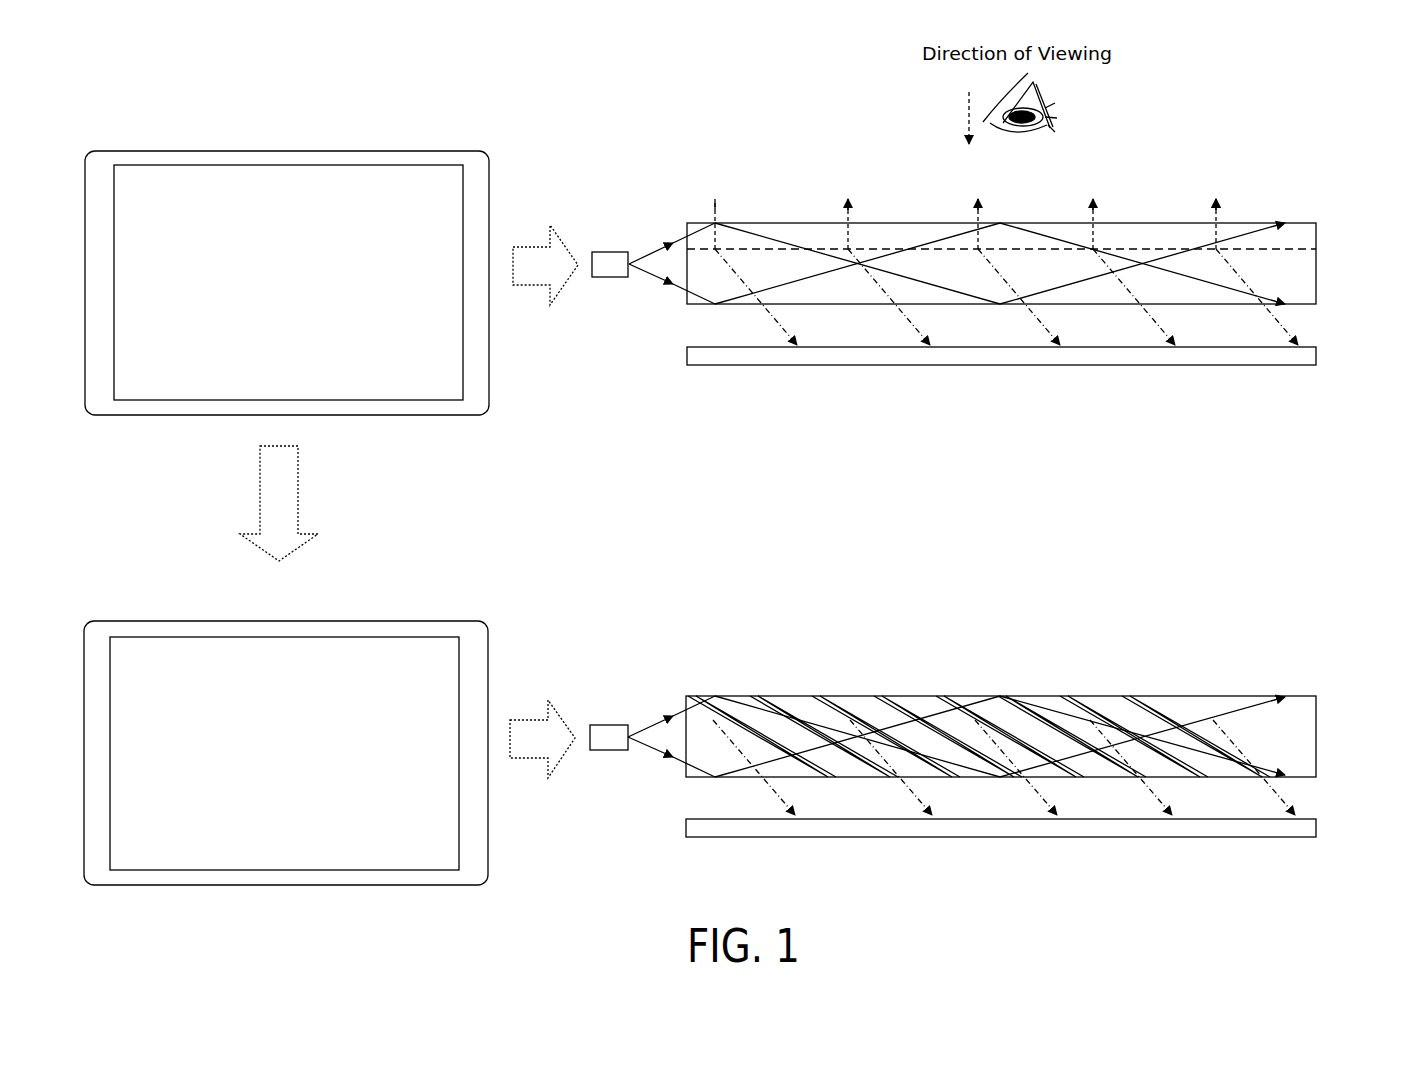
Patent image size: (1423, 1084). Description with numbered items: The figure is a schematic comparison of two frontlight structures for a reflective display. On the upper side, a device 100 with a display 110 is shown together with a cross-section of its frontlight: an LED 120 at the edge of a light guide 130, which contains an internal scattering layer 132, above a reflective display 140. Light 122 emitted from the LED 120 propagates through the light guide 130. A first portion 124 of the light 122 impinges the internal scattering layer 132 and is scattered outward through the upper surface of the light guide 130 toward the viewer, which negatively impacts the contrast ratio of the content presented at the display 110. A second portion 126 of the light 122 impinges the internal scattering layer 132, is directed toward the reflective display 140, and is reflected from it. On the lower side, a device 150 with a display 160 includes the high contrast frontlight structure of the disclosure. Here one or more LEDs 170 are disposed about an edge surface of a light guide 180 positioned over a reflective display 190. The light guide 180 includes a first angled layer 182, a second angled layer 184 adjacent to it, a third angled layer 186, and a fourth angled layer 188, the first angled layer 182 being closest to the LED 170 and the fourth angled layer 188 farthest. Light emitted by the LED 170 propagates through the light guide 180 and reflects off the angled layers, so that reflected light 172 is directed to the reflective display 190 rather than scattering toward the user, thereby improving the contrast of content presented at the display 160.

The device 100 is at (526, 157).
The display 110 is at (297, 165).
The LED 120 is at (612, 252).
The light 122 is at (1238, 237).
The first portion of the light 124 is at (851, 202).
The second portion of the light 126 is at (742, 280).
The light guide 130 is at (1316, 283).
The internal scattering layer 132 is at (1295, 249).
The reflective display 140 is at (1316, 352).
The device 150 is at (514, 589).
The display 160 is at (282, 637).
The LED 170 is at (610, 725).
The reflected light 172 is at (1284, 802).
The light guide 180 is at (1316, 743).
The first angled layer 182 is at (716, 702).
The second angled layer 184 is at (743, 712).
The third angled layer 186 is at (791, 716).
The fourth angled layer 188 is at (818, 716).
The reflective display 190 is at (1316, 823).